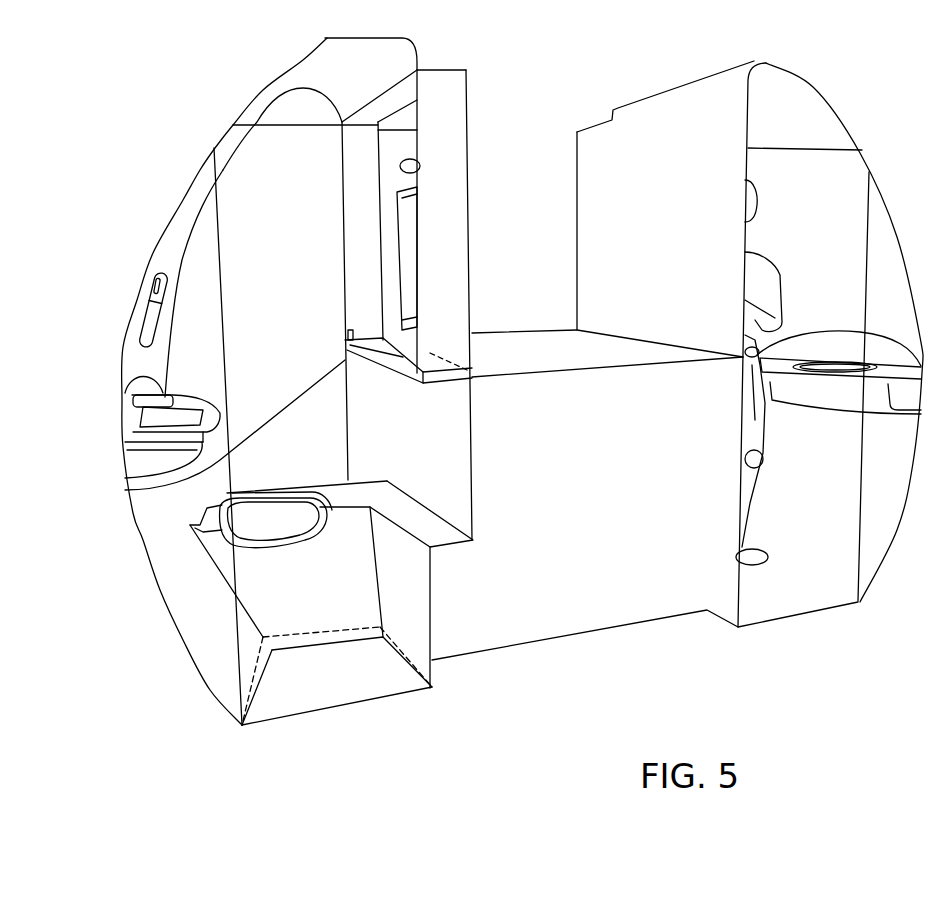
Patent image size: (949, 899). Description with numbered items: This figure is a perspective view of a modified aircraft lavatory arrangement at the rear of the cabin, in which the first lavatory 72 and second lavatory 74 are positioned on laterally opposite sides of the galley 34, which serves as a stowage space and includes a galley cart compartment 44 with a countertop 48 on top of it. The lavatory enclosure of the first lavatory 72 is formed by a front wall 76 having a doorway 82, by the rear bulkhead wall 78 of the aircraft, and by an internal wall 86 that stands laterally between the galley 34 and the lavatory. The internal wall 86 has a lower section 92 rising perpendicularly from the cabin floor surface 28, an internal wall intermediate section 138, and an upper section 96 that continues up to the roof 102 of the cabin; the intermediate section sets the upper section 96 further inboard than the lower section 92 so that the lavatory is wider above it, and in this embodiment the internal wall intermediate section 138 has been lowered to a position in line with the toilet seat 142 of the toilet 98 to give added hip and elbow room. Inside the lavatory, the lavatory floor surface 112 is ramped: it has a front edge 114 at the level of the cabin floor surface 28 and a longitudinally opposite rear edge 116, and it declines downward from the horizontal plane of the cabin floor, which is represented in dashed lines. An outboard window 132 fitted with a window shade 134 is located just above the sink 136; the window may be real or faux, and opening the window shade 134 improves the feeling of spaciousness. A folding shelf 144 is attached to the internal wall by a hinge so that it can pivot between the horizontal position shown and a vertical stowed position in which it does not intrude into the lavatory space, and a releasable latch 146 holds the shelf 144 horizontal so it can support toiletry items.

The floor surface 28 is at (500, 710).
The galley 34 is at (552, 117).
The galley cart compartment 44 is at (712, 647).
The countertop 48 is at (511, 333).
The first lavatory 72 is at (247, 160).
The second lavatory 74 is at (857, 183).
The front wall 76 is at (187, 310).
The rear bulkhead wall 78 is at (280, 150).
The doorway 82 is at (216, 206).
The internal wall 86 is at (410, 635).
The lower section 92 is at (380, 637).
The upper section 96 is at (392, 303).
The toilet 98 is at (262, 517).
The roof 102 is at (364, 58).
The lavatory floor surface 112 is at (273, 678).
The front edge 114 is at (270, 717).
The rear edge 116 is at (300, 647).
The outboard window 132 is at (148, 308).
The window shade 134 is at (155, 287).
The sink 136 is at (125, 425).
The internal wall intermediate section 138 is at (450, 530).
The toilet seat 142 is at (195, 533).
The folding shelf 144 is at (125, 478).
The releasable latch 146 is at (347, 337).